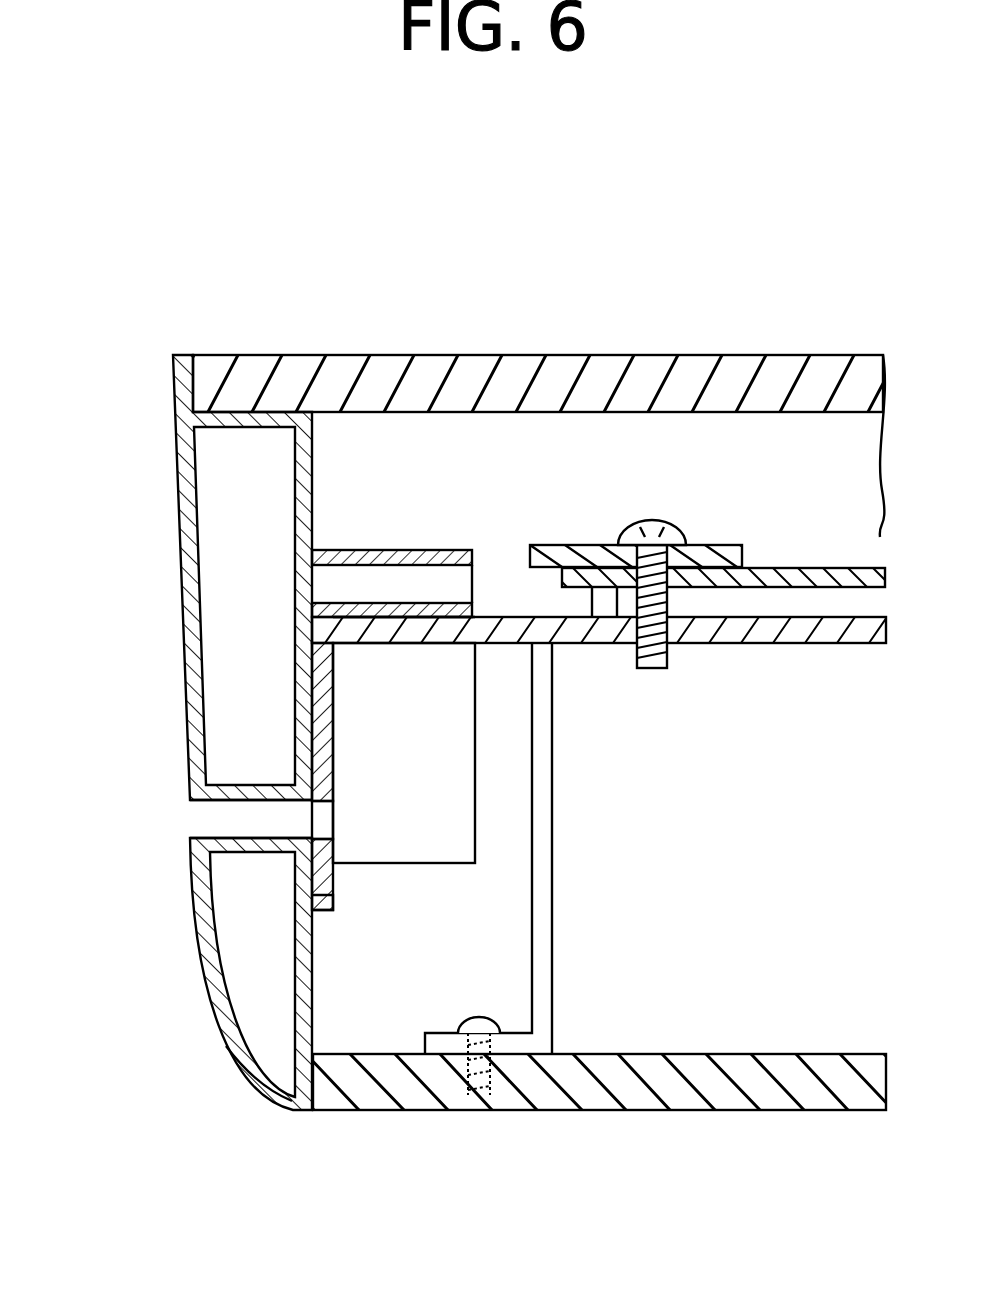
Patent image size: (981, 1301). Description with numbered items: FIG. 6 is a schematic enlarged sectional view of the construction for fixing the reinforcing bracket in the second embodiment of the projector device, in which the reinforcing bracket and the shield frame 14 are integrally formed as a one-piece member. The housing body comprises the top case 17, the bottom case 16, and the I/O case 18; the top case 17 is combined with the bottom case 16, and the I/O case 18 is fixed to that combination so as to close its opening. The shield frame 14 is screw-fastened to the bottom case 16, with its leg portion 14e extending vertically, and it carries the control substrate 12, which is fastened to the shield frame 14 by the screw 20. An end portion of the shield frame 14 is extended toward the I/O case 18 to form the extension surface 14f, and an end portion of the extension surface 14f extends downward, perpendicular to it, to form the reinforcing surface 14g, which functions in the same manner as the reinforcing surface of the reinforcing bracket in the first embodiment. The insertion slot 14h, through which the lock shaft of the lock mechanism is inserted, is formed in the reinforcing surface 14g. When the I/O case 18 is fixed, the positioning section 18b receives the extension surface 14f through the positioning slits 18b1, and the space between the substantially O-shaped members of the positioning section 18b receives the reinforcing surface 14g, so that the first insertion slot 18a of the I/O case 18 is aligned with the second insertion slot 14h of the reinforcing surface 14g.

The control substrate 12 is at (808, 568).
The shield frame 14 is at (800, 643).
The leg portion 14e is at (553, 922).
The extension surface 14f is at (507, 617).
The reinforcing surface 14g is at (333, 912).
The insertion slot 14h is at (325, 832).
The bottom case 16 is at (603, 1110).
The top case 17 is at (613, 355).
The I/O case 18 is at (175, 491).
The first insertion slot 18a is at (197, 818).
The positioning section 18b is at (408, 865).
The positioning slits 18b1 is at (426, 617).
The screw 20 is at (652, 520).